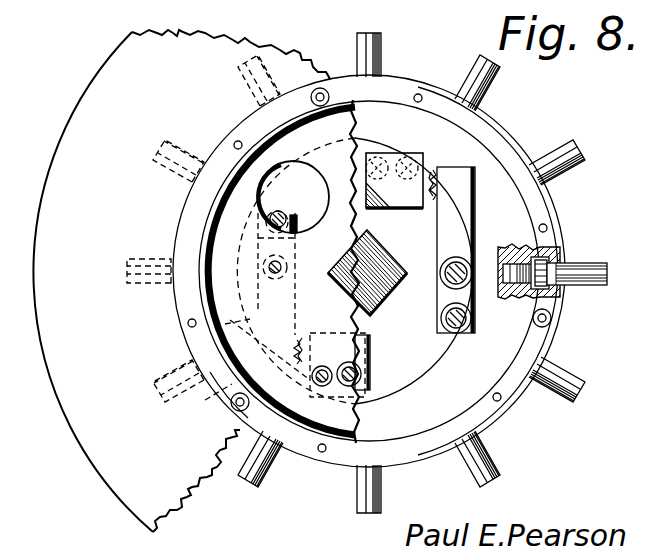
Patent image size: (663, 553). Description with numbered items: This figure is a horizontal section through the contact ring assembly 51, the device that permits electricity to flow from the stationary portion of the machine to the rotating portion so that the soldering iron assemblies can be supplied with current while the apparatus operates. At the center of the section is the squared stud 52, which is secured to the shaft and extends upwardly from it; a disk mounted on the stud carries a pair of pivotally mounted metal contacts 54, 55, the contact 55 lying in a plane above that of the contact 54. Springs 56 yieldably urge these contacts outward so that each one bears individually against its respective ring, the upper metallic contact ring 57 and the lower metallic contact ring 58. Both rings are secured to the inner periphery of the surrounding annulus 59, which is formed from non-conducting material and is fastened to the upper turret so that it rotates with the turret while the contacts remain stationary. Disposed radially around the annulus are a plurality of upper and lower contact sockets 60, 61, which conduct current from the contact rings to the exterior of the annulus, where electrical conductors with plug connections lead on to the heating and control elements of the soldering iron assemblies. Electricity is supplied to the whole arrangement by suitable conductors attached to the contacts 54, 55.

The contact ring assembly 51 is at (228, 229).
The squared stud 52 is at (357, 264).
The metal contact 54 is at (185, 328).
The metal contact 55 is at (462, 217).
The springs 56 is at (437, 180).
The upper metallic contact ring 57 is at (292, 442).
The lower metallic contact ring 58 is at (418, 422).
The annulus 59 is at (527, 349).
The upper contact sockets 60 is at (243, 86).
The lower contact sockets 61 is at (580, 262).